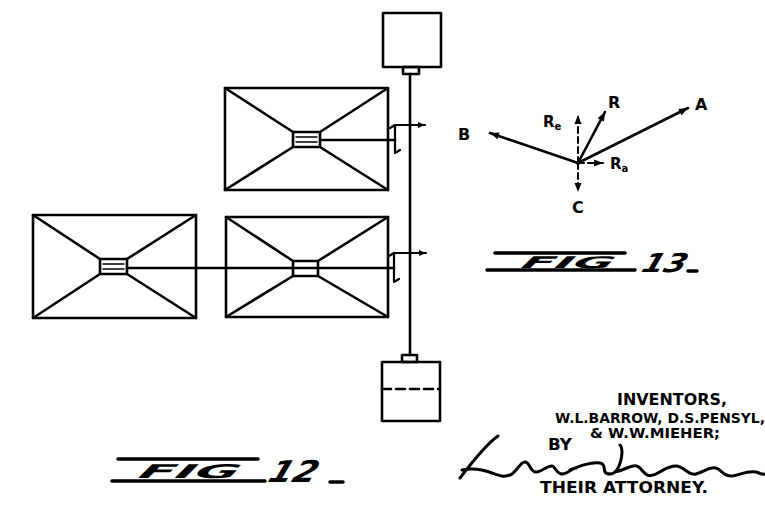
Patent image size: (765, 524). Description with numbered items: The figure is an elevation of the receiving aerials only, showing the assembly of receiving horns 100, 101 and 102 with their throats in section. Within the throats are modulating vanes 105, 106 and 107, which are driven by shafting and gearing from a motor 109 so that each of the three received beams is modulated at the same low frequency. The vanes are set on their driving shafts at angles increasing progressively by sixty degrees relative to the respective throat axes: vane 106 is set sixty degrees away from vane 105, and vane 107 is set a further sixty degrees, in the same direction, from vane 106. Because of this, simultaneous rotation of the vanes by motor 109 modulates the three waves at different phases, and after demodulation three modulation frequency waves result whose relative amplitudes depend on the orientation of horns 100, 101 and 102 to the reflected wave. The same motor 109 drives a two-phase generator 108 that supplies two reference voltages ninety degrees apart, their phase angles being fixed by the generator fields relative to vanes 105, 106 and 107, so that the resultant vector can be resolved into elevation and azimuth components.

The receiving horn 100 is at (301, 126).
The receiving horn 101 is at (303, 266).
The receiving horn 102 is at (114, 264).
The modulating vane 105 is at (293, 134).
The modulating vane 106 is at (287, 262).
The modulating vane 107 is at (113, 259).
The two-phase generator 108 is at (382, 411).
The motor 109 is at (383, 30).